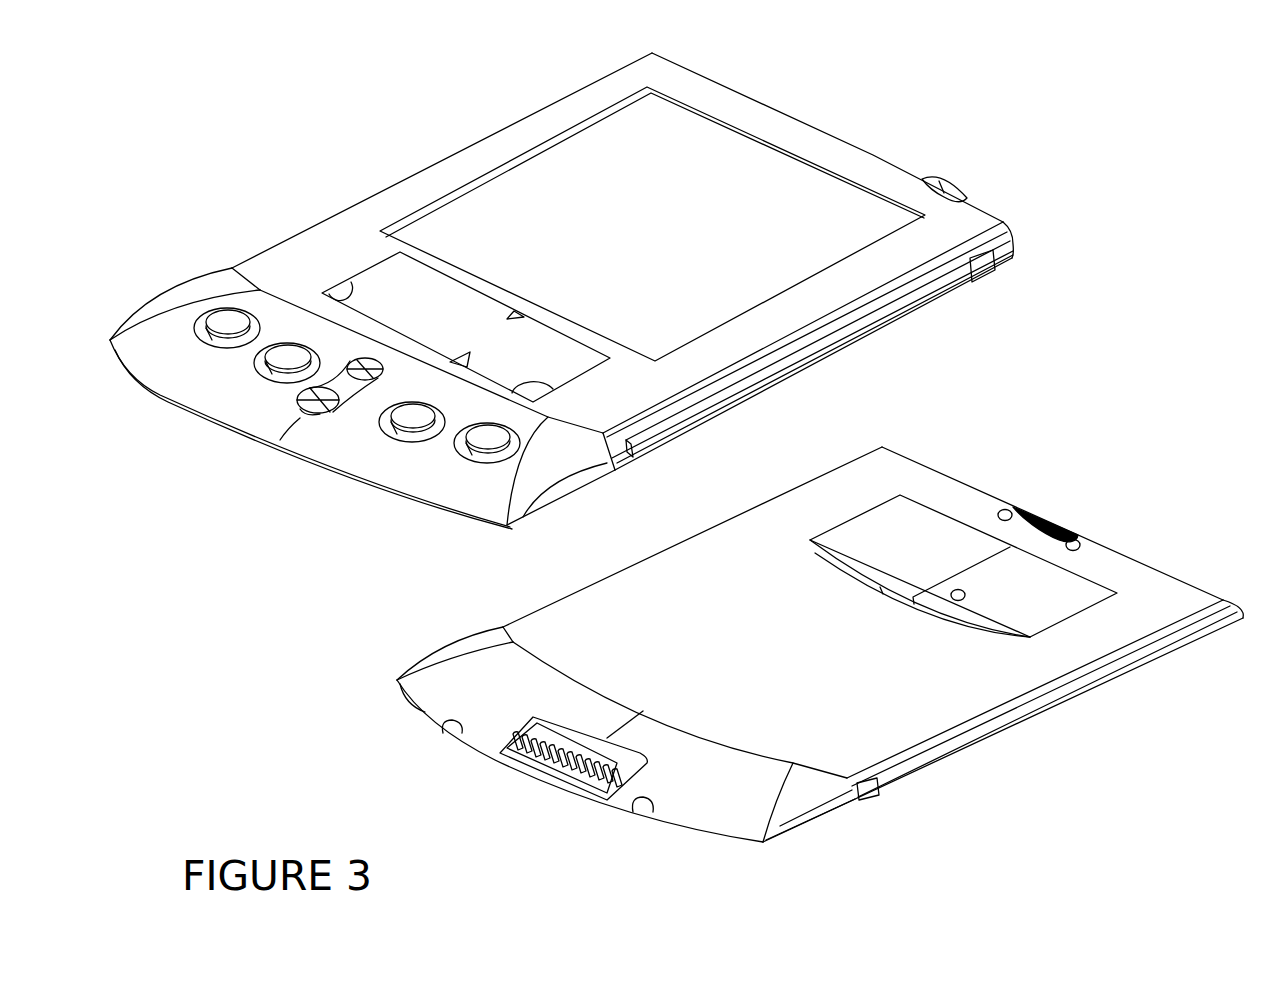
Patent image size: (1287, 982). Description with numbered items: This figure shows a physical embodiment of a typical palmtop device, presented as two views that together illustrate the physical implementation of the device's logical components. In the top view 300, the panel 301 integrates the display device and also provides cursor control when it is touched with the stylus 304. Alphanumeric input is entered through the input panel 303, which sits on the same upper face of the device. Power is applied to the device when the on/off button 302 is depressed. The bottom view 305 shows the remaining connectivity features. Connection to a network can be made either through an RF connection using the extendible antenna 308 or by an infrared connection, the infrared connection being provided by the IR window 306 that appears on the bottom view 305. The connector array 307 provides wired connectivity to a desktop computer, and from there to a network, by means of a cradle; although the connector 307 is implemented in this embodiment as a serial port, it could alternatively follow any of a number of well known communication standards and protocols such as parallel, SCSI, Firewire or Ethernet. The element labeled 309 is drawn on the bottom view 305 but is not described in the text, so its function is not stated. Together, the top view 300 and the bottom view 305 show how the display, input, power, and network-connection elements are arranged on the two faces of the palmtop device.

The top view 300 is at (475, 155).
The panel 301 is at (700, 181).
The on/off button 302 is at (957, 183).
The input panel 303 is at (426, 308).
The stylus 304 is at (908, 296).
The bottom view 305 is at (617, 573).
The IR window 306 is at (1053, 510).
The connector array 307 is at (520, 767).
The extendible antenna 308 is at (1110, 683).
The battery door 309 is at (1040, 598).